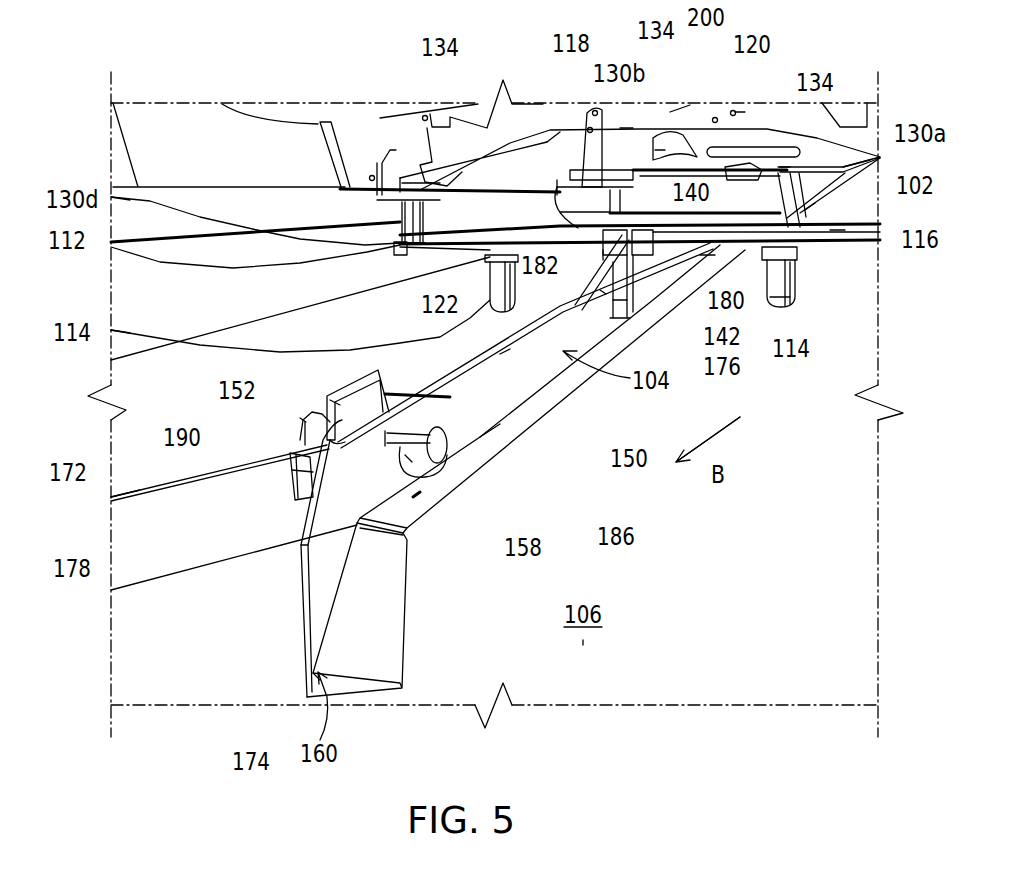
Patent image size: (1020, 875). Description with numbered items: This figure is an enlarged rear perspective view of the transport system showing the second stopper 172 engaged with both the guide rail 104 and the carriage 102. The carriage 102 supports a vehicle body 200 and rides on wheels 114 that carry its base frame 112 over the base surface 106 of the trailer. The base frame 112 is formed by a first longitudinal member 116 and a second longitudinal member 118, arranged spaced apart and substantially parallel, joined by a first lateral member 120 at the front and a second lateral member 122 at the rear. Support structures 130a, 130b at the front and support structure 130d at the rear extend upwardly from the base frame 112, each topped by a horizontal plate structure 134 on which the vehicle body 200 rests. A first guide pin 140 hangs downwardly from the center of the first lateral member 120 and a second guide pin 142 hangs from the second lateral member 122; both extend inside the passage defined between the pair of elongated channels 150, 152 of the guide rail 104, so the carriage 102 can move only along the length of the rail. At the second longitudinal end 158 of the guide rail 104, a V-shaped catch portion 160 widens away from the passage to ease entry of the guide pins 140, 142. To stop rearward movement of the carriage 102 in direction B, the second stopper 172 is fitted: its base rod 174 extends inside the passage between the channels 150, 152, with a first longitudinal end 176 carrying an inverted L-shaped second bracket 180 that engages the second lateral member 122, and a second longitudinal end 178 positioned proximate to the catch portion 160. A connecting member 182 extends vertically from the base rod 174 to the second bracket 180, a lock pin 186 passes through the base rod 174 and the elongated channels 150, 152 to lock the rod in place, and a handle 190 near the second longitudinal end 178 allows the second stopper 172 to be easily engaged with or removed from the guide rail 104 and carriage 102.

The carriage 102 is at (807, 204).
The guide rail 104 is at (563, 351).
The base surface 106 is at (602, 627).
The base frame 112 is at (111, 242).
The traction members 114 is at (111, 330).
The first longitudinal member 116 is at (837, 232).
The second longitudinal member 118 is at (557, 187).
The first lateral member 120 is at (740, 112).
The second lateral member 122 is at (430, 247).
The support structure 130a is at (843, 167).
The support structure 130b is at (608, 140).
The support structure 130d is at (111, 197).
The plate structure 134 is at (402, 183).
The first guide pin 140 is at (663, 152).
The second guide pin 142 is at (655, 247).
The elongated channel 150 is at (485, 440).
The elongated channel 152 is at (325, 400).
The second longitudinal end 158 is at (407, 528).
The catch portion 160 is at (327, 697).
The second stopper 172 is at (272, 470).
The base rod 174 is at (300, 520).
The first longitudinal end 176 is at (603, 305).
The second longitudinal end 178 is at (298, 483).
The second bracket 180 is at (703, 262).
The connecting member 182 is at (600, 270).
The lock pin 186 is at (405, 470).
The handle 190 is at (305, 416).
The vehicle body 200 is at (676, 110).
The direction B is at (735, 428).